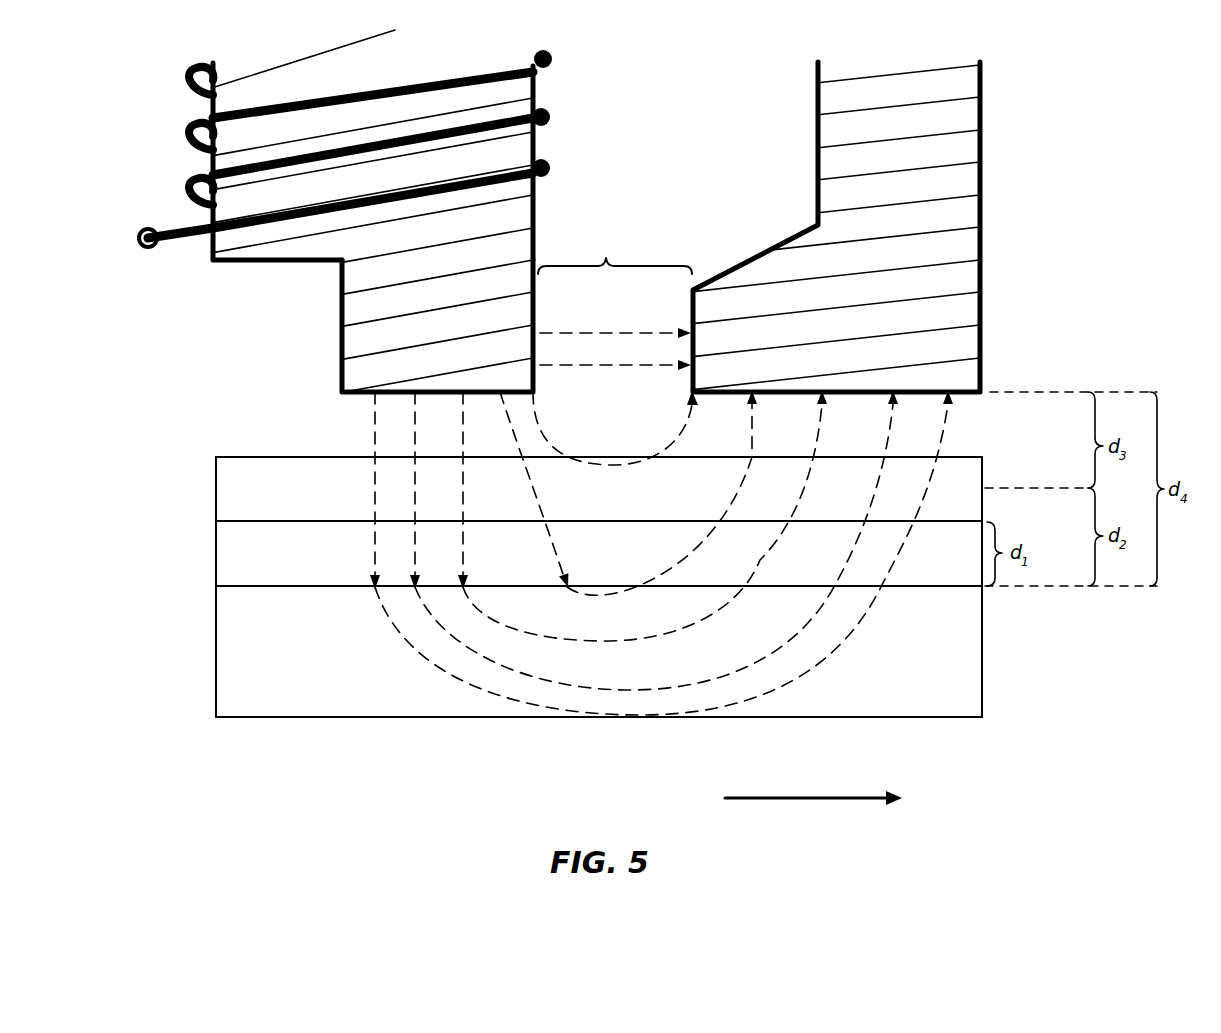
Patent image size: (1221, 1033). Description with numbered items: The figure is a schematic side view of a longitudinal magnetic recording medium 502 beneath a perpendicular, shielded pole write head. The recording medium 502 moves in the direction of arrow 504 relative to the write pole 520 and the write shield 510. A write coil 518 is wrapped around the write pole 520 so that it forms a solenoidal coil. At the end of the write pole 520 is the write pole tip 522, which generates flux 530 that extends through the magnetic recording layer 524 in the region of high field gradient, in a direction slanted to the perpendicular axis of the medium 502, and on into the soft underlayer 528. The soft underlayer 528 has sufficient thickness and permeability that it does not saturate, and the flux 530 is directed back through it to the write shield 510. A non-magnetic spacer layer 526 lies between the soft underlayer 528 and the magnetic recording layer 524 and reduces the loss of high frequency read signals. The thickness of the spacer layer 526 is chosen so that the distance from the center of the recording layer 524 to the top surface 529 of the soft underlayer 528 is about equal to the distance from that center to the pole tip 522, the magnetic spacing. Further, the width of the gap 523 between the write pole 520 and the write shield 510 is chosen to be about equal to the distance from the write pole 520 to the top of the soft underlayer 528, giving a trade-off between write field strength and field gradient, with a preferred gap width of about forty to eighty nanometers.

The magnetic recording medium 502 is at (1016, 664).
The arrow 504 is at (770, 801).
The write shield 510 is at (968, 208).
The write coil 518 is at (552, 118).
The write pole 520 is at (242, 253).
The write pole tip 522 is at (358, 346).
The gap 523 is at (624, 410).
The magnetic recording layer 524 is at (215, 493).
The non-magnetic spacer layer 526 is at (215, 558).
The soft underlayer 528 is at (215, 645).
The top surface 529 is at (258, 587).
The flux 530 is at (540, 490).